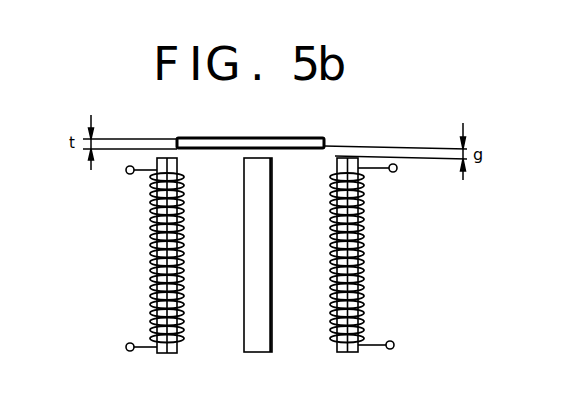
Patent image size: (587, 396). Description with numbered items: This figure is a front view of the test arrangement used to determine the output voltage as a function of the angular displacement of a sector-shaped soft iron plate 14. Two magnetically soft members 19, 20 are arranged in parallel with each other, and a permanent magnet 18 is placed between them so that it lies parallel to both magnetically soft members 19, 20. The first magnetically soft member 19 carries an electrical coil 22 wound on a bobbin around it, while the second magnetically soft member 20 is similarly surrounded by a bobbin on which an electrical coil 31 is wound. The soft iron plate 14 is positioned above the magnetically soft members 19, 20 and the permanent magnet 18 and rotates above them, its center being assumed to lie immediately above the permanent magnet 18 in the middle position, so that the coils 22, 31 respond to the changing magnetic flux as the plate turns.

The soft iron plate 14 is at (321, 138).
The permanent magnet 18 is at (251, 327).
The first magnetically soft member 19 is at (157, 262).
The second magnetically soft member 20 is at (356, 276).
The electrical coil 22 is at (150, 210).
The electrical coil 31 is at (365, 224).